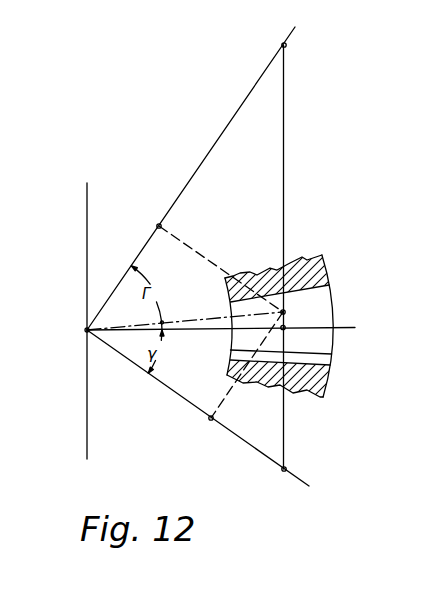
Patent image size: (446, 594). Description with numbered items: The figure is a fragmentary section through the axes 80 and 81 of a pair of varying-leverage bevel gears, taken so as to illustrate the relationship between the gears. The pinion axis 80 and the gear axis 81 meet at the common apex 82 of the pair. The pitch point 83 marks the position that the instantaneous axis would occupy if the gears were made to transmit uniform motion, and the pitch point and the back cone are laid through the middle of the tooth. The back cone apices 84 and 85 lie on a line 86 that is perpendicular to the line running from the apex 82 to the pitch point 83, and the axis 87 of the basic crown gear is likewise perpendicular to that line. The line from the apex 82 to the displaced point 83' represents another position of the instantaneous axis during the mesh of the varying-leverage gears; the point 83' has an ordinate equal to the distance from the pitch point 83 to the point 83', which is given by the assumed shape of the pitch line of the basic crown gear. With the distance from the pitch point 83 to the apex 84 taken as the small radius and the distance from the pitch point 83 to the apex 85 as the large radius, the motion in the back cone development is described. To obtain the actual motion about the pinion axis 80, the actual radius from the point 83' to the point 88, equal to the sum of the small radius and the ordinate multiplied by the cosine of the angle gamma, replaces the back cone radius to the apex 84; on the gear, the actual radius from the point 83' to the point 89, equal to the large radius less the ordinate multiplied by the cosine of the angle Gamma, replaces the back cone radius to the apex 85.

The pinion axis 80 is at (191, 405).
The gear axis 81 is at (208, 153).
The common apex 82 is at (85, 332).
The pitch point 83 is at (323, 317).
The displaced pitch point 83' is at (228, 307).
The back cone apex 84 is at (282, 473).
The back cone apex 85 is at (282, 43).
The line through back cone apices 86 is at (285, 203).
The axis of basic crown gear 87 is at (85, 405).
The actual pinion radius point 88 is at (210, 421).
The actual gear radius point 89 is at (157, 225).